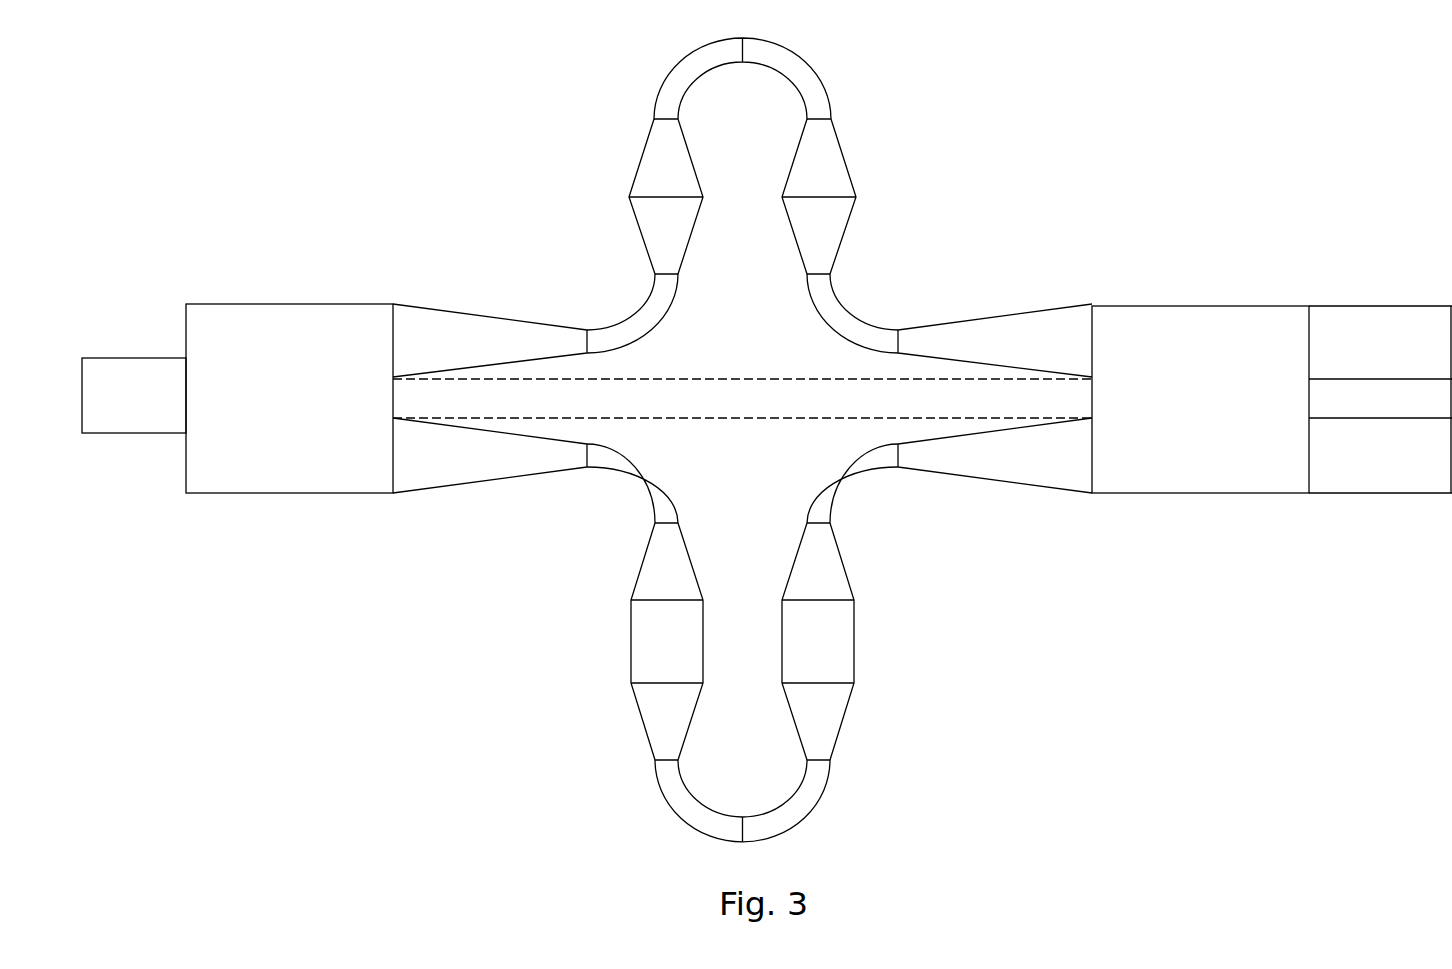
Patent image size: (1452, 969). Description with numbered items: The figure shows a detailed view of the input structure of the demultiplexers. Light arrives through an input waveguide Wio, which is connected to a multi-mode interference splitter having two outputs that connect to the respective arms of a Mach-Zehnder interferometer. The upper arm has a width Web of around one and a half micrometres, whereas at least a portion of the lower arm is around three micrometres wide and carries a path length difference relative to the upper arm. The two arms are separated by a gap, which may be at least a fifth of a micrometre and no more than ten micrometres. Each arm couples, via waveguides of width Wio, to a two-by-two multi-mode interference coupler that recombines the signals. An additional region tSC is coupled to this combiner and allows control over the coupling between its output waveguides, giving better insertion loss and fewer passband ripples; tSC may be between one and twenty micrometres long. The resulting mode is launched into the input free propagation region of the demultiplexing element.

The input waveguide Wio is at (170, 380).
The element gap is at (931, 383).
The tSC region tSC is at (1445, 513).
The upper arm width Web is at (702, 90).